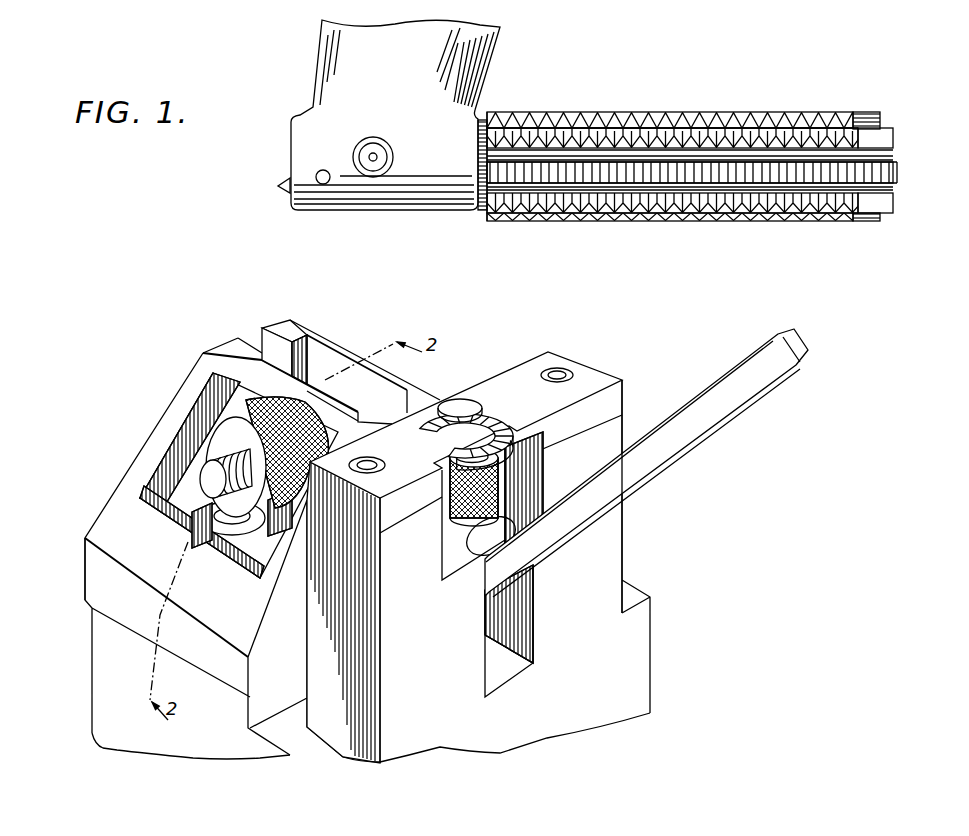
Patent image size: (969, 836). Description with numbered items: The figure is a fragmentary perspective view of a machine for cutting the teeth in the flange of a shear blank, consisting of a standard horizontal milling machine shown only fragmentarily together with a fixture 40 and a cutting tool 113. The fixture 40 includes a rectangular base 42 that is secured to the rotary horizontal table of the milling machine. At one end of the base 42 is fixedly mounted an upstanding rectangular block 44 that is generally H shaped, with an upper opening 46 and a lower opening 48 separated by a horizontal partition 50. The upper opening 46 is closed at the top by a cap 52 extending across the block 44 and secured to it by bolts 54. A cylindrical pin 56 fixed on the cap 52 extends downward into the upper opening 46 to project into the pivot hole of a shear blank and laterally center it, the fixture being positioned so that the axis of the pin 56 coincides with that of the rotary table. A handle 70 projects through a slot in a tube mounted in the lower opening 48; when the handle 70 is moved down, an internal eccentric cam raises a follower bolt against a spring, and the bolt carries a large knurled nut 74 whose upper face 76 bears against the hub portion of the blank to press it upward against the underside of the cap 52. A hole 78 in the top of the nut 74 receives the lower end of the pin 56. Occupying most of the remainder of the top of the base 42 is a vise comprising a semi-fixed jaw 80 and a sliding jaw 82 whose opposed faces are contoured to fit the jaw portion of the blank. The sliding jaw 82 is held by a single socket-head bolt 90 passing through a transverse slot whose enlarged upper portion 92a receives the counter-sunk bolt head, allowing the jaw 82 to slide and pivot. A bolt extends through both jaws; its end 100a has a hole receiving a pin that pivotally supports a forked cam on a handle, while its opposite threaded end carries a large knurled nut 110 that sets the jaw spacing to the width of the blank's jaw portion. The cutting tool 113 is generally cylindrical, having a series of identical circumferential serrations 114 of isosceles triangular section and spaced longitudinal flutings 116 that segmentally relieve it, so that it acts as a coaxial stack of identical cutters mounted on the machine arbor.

The fixture 40 is at (182, 362).
The rectangular base 42 is at (90, 675).
The upstanding rectangular block 44 is at (622, 530).
The upper opening 46 is at (533, 477).
The lower opening 48 is at (527, 597).
The horizontal partition 50 is at (460, 558).
The cap 52 is at (617, 390).
The bolts 54 is at (365, 460).
The cylindrical pin 56 is at (470, 408).
The handle 70 is at (667, 462).
The knurled nut 74 is at (455, 520).
The upper face of nut 76 is at (493, 453).
The hole 78 is at (450, 457).
The semi-fixed jaw 80 is at (290, 323).
The sliding jaw 82 is at (148, 447).
The socket-head bolt 90 is at (228, 527).
The upper portion of slot 92a is at (222, 540).
The end of bolt 100a is at (207, 487).
The knurled nut 110 is at (216, 433).
The cutting tool 113 is at (660, 108).
The circumferential serrations 114 is at (577, 112).
The longitudinal flutings 116 is at (897, 188).